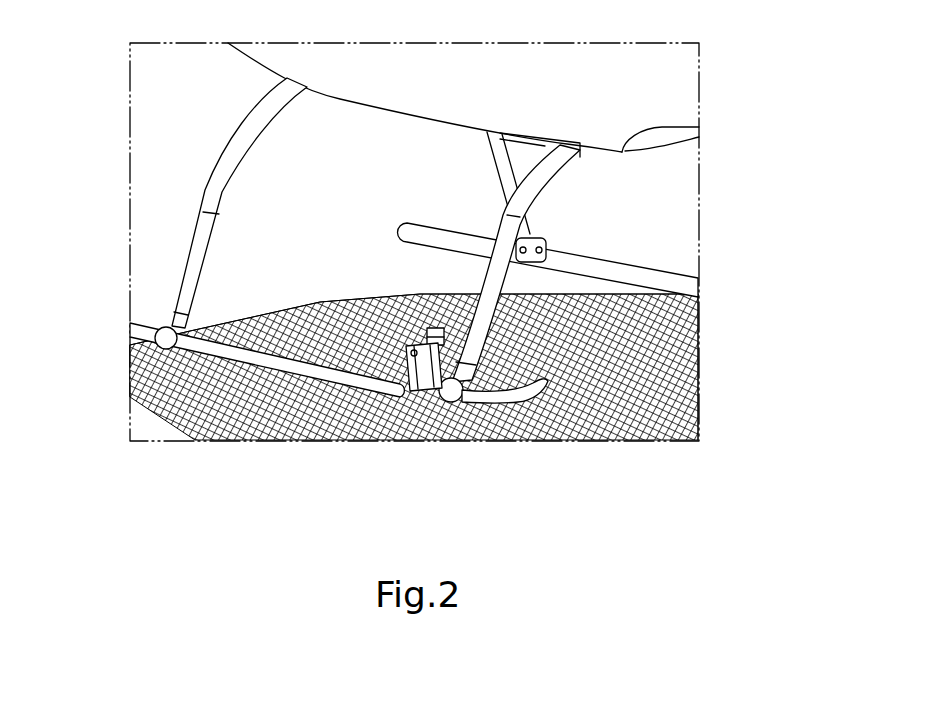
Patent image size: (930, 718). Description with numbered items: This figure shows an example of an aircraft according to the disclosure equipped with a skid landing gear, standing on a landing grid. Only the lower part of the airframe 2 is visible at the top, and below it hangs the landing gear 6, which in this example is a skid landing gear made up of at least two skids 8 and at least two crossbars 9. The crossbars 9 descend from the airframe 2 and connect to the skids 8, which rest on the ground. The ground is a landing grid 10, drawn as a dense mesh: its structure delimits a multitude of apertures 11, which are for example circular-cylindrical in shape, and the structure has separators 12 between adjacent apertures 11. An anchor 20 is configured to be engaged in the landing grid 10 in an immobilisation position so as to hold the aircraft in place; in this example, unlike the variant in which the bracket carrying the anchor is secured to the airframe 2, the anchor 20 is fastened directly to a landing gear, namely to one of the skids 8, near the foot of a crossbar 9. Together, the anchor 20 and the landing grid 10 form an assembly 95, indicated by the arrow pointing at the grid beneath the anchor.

The airframe 2 is at (658, 88).
The landing gear 6 is at (402, 240).
The skid 8 is at (318, 372).
The crossbar 9 is at (246, 131).
The landing grid 10 is at (700, 387).
The aperture 11 is at (700, 337).
The separator 12 is at (700, 364).
The anchor 20 is at (412, 398).
The assembly 95 is at (503, 448).